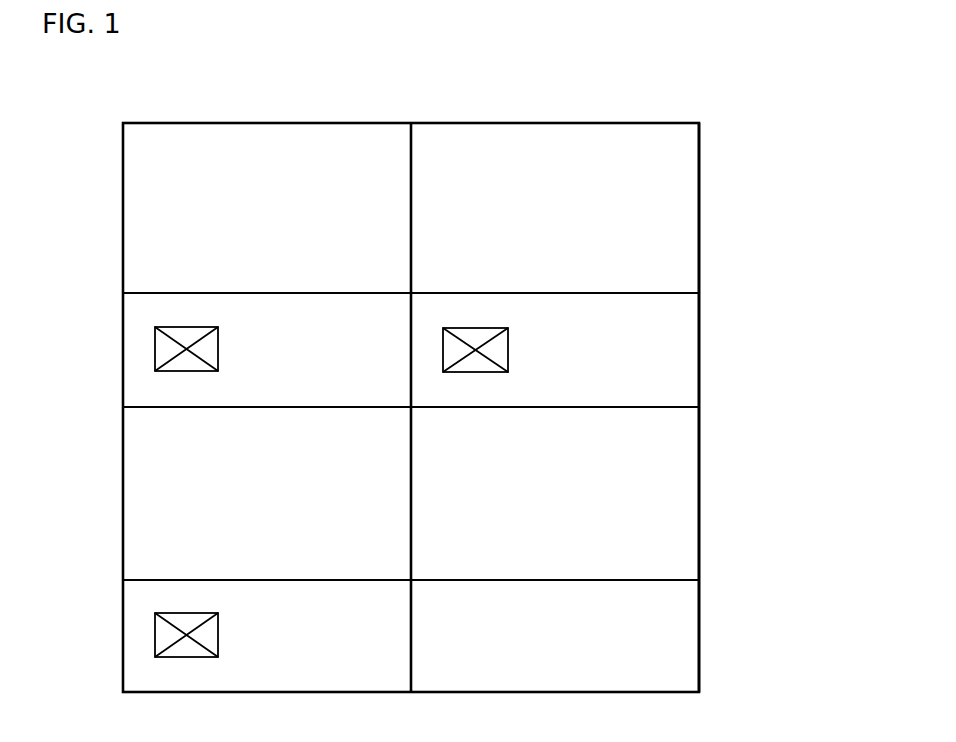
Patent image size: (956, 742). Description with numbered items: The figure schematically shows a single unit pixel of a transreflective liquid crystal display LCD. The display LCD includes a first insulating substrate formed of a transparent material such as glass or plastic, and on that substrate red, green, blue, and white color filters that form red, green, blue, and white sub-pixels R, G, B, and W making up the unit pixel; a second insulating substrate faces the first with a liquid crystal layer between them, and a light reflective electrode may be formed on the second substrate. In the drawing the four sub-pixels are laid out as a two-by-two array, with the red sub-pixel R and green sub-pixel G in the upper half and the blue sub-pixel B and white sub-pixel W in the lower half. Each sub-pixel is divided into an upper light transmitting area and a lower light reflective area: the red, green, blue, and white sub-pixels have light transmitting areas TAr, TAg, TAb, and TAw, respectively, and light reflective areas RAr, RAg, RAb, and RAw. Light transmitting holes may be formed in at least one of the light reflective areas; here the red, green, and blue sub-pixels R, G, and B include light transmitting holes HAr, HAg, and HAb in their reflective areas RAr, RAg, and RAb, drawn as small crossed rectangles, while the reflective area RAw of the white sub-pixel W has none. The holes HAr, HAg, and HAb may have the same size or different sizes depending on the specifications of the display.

The transreflective liquid crystal display LCD is at (742, 78).
The red sub-pixel R is at (152, 217).
The green sub-pixel G is at (672, 218).
The blue sub-pixel B is at (152, 502).
The white sub-pixel W is at (672, 503).
The light transmitting area TAr is at (267, 208).
The light transmitting area TAg is at (555, 208).
The light transmitting area TAb is at (267, 493).
The light transmitting area TAw is at (555, 493).
The light reflective area RAr is at (267, 350).
The light reflective area RAg is at (555, 350).
The light reflective area RAb is at (267, 636).
The light reflective area RAw is at (555, 636).
The light transmitting hole HAr is at (155, 348).
The light transmitting hole HAg is at (508, 362).
The light transmitting hole HAb is at (155, 634).